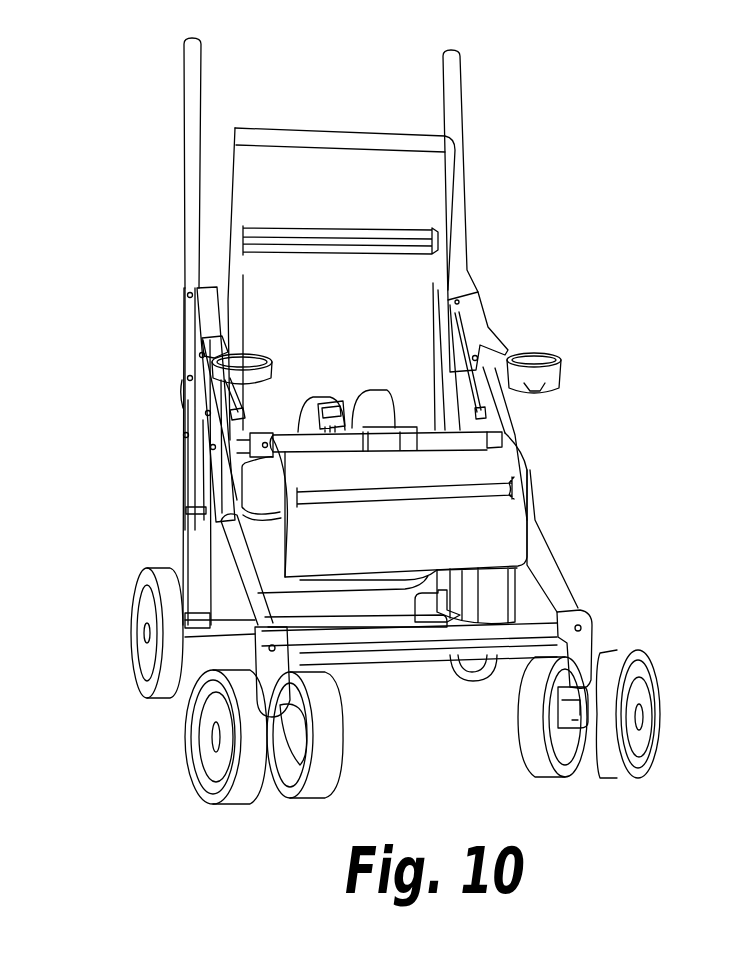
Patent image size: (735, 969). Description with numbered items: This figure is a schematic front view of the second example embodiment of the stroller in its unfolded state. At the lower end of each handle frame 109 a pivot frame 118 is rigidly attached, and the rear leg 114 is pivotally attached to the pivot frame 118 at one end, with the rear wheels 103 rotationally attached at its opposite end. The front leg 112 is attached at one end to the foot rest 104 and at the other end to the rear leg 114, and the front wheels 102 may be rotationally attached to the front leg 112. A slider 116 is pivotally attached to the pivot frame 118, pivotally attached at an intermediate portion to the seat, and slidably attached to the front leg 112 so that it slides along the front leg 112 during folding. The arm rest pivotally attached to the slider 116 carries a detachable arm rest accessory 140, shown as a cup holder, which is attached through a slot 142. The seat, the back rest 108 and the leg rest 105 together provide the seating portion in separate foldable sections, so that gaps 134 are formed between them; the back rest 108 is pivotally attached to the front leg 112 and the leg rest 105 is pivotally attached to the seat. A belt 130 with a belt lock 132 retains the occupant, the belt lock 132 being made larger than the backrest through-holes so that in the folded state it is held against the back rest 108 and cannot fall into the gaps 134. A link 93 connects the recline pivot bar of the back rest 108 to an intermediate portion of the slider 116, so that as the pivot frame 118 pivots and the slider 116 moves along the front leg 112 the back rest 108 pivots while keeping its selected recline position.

The handle frame 109 is at (189, 89).
The back rest 108 is at (445, 157).
The pivot frame 118 is at (188, 332).
The slot 142 is at (517, 326).
The arm rest accessory 140 is at (563, 373).
The link 93 is at (228, 398).
The rear leg 114 is at (184, 436).
The slider 116 is at (212, 519).
The front leg 112 is at (250, 577).
The leg rest 105 is at (520, 525).
The belt lock 132 is at (328, 400).
The belt 130 is at (372, 390).
The gaps 134 is at (492, 438).
The foot rest 104 is at (437, 660).
The rear wheels 103 is at (160, 687).
The front wheels 102 is at (637, 775).